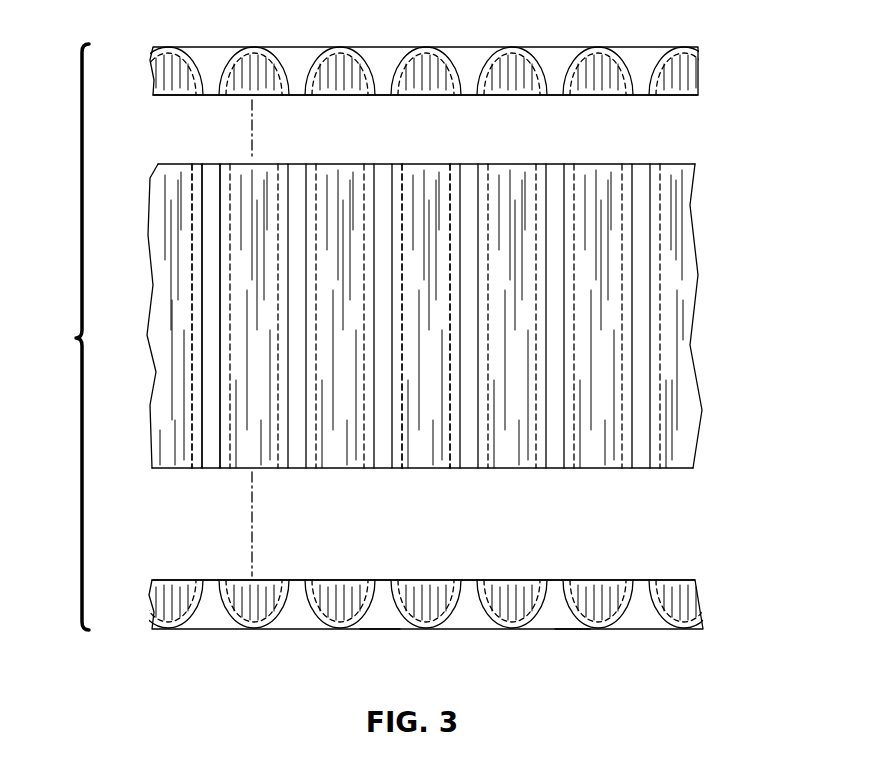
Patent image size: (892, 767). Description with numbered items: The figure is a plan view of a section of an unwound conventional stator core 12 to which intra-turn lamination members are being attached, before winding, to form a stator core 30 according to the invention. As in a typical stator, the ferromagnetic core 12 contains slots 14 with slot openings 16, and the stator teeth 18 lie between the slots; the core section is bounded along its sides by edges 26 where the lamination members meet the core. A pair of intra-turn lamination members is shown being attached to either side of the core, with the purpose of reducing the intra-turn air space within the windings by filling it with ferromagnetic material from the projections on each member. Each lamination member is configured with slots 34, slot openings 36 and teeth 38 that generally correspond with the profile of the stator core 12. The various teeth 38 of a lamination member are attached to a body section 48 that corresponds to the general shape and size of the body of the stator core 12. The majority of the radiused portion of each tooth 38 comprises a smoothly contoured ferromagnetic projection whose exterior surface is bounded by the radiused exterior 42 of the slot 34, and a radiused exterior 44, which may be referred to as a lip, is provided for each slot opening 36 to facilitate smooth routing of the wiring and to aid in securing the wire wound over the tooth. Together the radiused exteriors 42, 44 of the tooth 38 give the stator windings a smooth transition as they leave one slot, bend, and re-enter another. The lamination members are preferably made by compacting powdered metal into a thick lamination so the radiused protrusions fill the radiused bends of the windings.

The stator core 12 is at (460, 329).
The slots 14 is at (193, 400).
The slot openings 16 is at (213, 460).
The stator teeth 18 is at (393, 478).
The edge 26 is at (680, 164).
The stator core 30 is at (64, 337).
The slots 34 is at (228, 590).
The slot openings 36 is at (296, 600).
The teeth 38 is at (462, 647).
The radiused exterior 42 is at (583, 635).
The radiused exterior 44 is at (575, 625).
The body section 48 is at (380, 625).